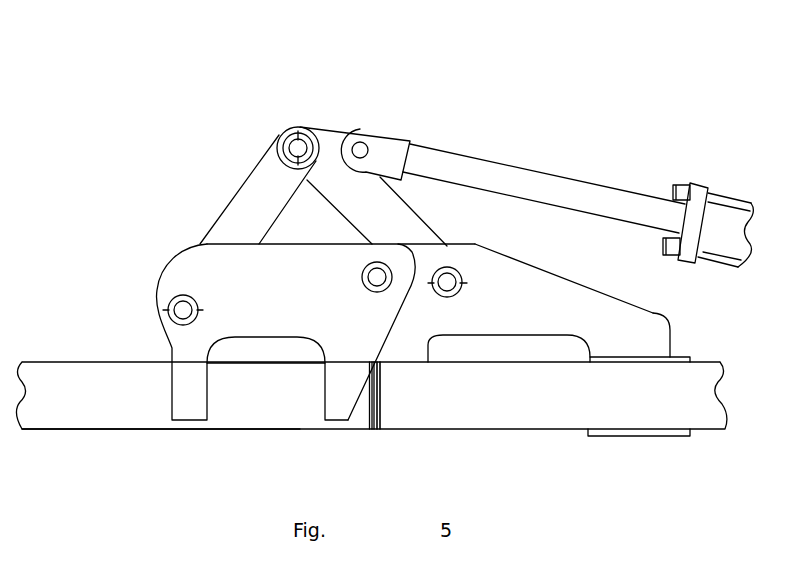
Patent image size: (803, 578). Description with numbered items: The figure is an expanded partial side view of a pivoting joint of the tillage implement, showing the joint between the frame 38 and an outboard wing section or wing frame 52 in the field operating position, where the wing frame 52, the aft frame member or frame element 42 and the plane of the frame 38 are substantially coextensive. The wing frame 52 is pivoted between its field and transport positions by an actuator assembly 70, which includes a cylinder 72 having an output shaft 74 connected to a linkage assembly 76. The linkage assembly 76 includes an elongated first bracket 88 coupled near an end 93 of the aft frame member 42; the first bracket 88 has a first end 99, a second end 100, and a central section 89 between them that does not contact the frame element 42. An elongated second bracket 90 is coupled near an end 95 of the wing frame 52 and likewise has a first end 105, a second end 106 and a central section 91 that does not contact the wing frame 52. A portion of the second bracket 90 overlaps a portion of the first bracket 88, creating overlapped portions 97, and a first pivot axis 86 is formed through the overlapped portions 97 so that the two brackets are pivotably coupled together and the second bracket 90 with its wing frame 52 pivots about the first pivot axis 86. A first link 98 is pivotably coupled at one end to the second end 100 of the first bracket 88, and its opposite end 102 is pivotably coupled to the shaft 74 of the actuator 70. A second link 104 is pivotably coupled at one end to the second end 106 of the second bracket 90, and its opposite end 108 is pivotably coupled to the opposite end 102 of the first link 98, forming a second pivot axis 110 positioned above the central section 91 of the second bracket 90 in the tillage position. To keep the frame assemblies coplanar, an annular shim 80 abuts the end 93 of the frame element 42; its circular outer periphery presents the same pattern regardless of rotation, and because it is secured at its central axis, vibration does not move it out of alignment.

The frame 38 is at (545, 440).
The aft frame member 42 is at (655, 420).
The outboard wing section 52 is at (89, 432).
The actuator assembly 70 is at (712, 168).
The cylinder 72 is at (723, 217).
The output shaft 74 is at (532, 182).
The linkage assembly 76 is at (237, 185).
The shim 80 is at (375, 429).
The first pivot axis 86 is at (381, 276).
The first bracket 88 is at (623, 328).
The central section 89 is at (517, 290).
The second bracket 90 is at (280, 311).
The central section 91 is at (296, 258).
The end 93 is at (381, 410).
The end 95 is at (370, 410).
The overlapped portions 97 is at (378, 258).
The first link 98 is at (394, 208).
The first end 99 is at (665, 346).
The second end 100 is at (420, 260).
The opposite end 102 is at (332, 132).
The second link 104 is at (243, 210).
The first end 105 is at (372, 348).
The second end 106 is at (165, 284).
The opposite end 108 is at (296, 127).
The second pivot axis 110 is at (297, 146).